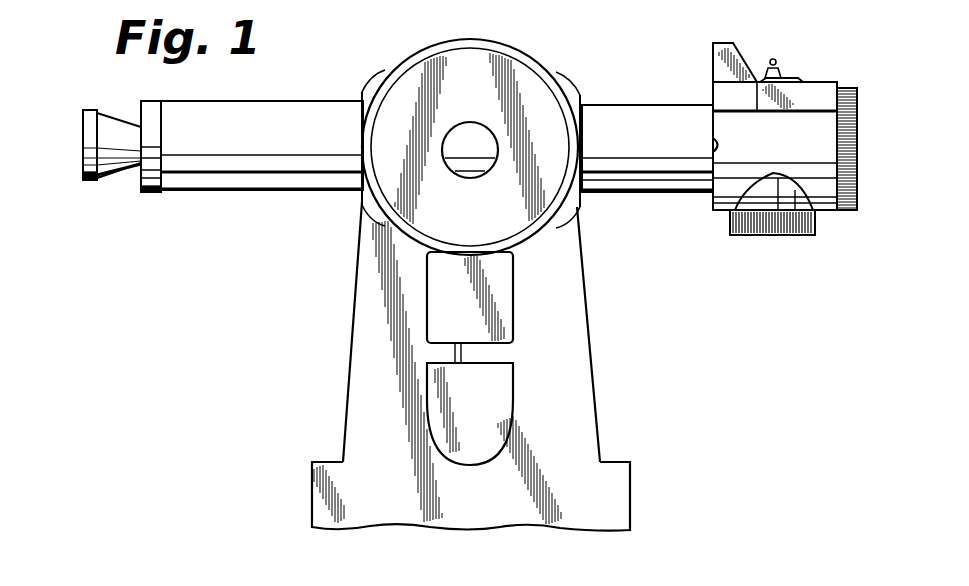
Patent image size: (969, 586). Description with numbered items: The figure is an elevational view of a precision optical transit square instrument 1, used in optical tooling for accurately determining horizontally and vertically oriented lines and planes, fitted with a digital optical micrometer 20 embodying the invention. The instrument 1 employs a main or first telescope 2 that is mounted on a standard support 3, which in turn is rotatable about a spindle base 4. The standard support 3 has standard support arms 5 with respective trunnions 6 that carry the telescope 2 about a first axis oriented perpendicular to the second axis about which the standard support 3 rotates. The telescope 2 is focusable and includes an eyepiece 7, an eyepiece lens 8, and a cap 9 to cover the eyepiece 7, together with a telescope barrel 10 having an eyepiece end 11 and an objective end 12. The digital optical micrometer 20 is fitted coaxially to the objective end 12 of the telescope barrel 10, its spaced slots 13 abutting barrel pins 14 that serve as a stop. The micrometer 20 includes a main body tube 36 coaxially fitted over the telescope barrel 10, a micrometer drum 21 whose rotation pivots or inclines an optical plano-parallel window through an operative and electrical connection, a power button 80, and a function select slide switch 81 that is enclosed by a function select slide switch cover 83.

The optical transit square instrument 1 is at (540, 39).
The telescope 2 is at (240, 101).
The standard support 3 is at (592, 345).
The spindle base 4 is at (632, 492).
The standard support arms 5 is at (352, 326).
The trunnions 6 is at (395, 235).
The eyepiece 7 is at (90, 182).
The eyepiece lens 8 is at (122, 115).
The cap 9 is at (83, 140).
The telescope barrel 10 is at (262, 193).
The eyepiece end 11 is at (152, 194).
The objective end 12 is at (640, 196).
The spaced slots 13 is at (713, 162).
The barrel pins 14 is at (713, 145).
The digital optical micrometer 20 is at (826, 48).
The micrometer drum 21 is at (778, 237).
The main body tube 36 is at (832, 212).
The power button 80 is at (776, 58).
The function select slide switch 81 is at (790, 80).
The function select slide switch cover 83 is at (757, 80).